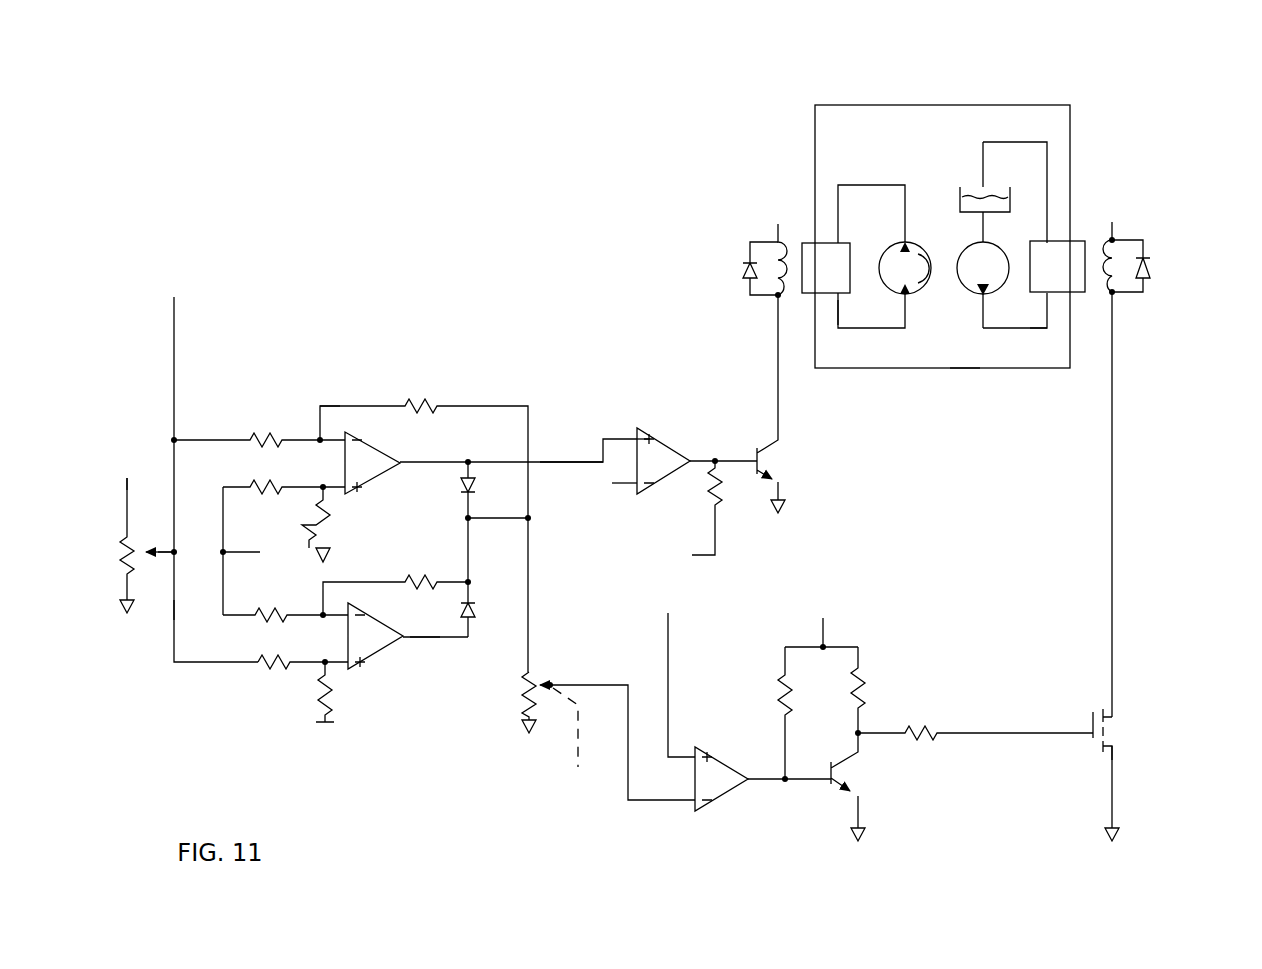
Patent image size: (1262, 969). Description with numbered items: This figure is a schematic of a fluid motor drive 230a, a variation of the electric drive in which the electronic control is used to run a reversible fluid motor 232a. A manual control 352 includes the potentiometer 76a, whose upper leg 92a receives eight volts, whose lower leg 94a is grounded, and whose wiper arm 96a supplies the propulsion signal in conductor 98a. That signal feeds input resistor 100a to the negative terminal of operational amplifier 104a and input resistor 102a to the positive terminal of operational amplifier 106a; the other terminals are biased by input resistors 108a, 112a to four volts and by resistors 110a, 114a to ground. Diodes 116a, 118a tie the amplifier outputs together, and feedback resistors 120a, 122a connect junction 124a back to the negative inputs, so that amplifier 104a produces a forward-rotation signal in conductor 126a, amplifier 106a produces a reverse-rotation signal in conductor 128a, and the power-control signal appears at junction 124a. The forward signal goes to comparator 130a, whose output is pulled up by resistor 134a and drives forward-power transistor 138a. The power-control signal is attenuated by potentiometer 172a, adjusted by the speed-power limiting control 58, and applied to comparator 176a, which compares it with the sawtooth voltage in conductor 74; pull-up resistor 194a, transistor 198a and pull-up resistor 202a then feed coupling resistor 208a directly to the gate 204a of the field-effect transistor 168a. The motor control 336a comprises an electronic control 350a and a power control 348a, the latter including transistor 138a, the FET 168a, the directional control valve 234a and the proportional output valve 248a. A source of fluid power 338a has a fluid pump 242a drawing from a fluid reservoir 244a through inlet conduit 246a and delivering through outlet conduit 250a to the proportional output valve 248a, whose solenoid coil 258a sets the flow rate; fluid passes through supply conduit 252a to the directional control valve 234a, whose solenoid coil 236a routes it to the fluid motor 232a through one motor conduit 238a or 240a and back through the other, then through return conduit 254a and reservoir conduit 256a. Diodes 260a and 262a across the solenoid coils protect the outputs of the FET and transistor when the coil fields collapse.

The manual control 352 is at (148, 288).
The conductor 98a is at (177, 300).
The input resistor 100a is at (278, 436).
The input resistor 102a is at (266, 668).
The operational amplifier 104a is at (369, 447).
The operational amplifier 106a is at (368, 667).
The input resistor 108a is at (278, 486).
The resistor 110a is at (322, 520).
The input resistor 112a is at (278, 619).
The resistor 114a is at (320, 702).
The diode 116a is at (461, 483).
The diode 118a is at (464, 610).
The feedback resistor 120a is at (446, 406).
The feedback resistor 122a is at (430, 561).
The junction 124a is at (462, 518).
The conductor 126a is at (570, 458).
The conductor 128a is at (420, 638).
The comparator 130a is at (664, 440).
The pull-up resistor 134a is at (708, 495).
The forward-power transistor 138a is at (758, 470).
The upper leg 92a is at (130, 545).
The lower leg 94a is at (128, 570).
The wiper arm 96a is at (152, 554).
The potentiometer 76a is at (122, 676).
The potentiometer 172a is at (490, 735).
The speed-power limiting control 58 is at (544, 786).
The conductor 74 is at (668, 623).
The comparator 176a is at (712, 812).
The pull-up resistor 194a is at (778, 696).
The transistor 198a is at (832, 790).
The pull-up resistor 202a is at (866, 672).
The gate 204a is at (1090, 716).
The coupling resistor 208a is at (945, 737).
The field-effect transistor 168a is at (1056, 790).
The fluid motor drive 230a is at (352, 788).
The electronic control 350a is at (425, 236).
The motor control 336a is at (581, 274).
The power control 348a is at (796, 84).
The source of fluid power 338a is at (1089, 139).
The fluid motor 232a is at (903, 296).
The directional control valve 234a is at (848, 240).
The solenoid coil 236a is at (776, 250).
The motor conduit 238a is at (873, 185).
The motor conduit 240a is at (836, 330).
The fluid pump 242a is at (973, 292).
The fluid reservoir 244a is at (962, 190).
The inlet conduit 246a is at (975, 228).
The proportional output valve 248a is at (1035, 293).
The outlet conduit 250a is at (1045, 333).
The supply conduit 252a is at (963, 369).
The return conduit 254a is at (1046, 140).
The reservoir conduit 256a is at (1049, 142).
The solenoid coil 258a is at (1118, 300).
The diode 260a is at (1150, 266).
The diode 262a is at (742, 270).